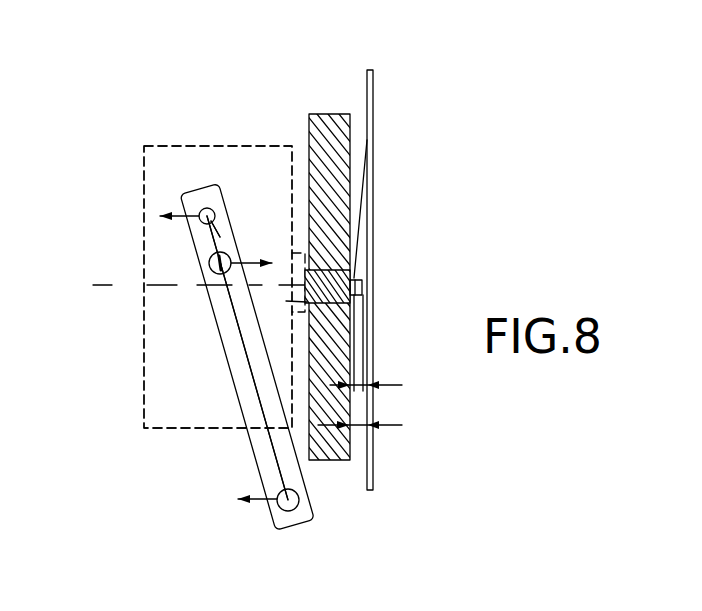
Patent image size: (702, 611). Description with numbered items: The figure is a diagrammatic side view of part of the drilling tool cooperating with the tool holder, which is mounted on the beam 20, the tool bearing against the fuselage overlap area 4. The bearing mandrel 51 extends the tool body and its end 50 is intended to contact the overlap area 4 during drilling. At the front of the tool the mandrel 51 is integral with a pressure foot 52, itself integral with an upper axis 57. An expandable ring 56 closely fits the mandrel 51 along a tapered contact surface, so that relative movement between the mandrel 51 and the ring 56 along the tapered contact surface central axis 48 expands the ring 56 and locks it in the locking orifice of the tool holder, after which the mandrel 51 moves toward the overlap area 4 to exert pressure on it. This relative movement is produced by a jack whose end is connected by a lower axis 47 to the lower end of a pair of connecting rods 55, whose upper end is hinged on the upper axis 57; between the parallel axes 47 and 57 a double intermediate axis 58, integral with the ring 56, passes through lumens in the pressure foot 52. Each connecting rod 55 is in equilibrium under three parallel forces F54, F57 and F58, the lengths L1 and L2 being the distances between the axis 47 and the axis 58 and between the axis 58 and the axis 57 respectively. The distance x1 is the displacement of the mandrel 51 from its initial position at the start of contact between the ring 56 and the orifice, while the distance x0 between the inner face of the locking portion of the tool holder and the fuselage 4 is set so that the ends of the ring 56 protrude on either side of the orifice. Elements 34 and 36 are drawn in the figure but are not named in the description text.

The overlap area 4 is at (372, 70).
The beam 20 is at (138, 275).
The housing block 34 is at (318, 114).
The stop element 36 is at (335, 282).
The lower axis 47 is at (285, 511).
The tapered contact surface central axis 48 is at (102, 285).
The end of the mandrel 50 is at (367, 130).
The bearing mandrel 51 is at (283, 299).
The pressure foot 52 is at (284, 180).
The connecting rods 55 is at (312, 506).
The expandable ring 56 is at (332, 305).
The upper axis 57 is at (205, 208).
The intermediate axis 58 is at (209, 262).
The force F54 is at (252, 503).
The force F57 is at (174, 212).
The force F58 is at (250, 262).
The length L1 is at (272, 447).
The length L2 is at (220, 237).
The distance x0 is at (364, 416).
The distance x1 is at (370, 376).